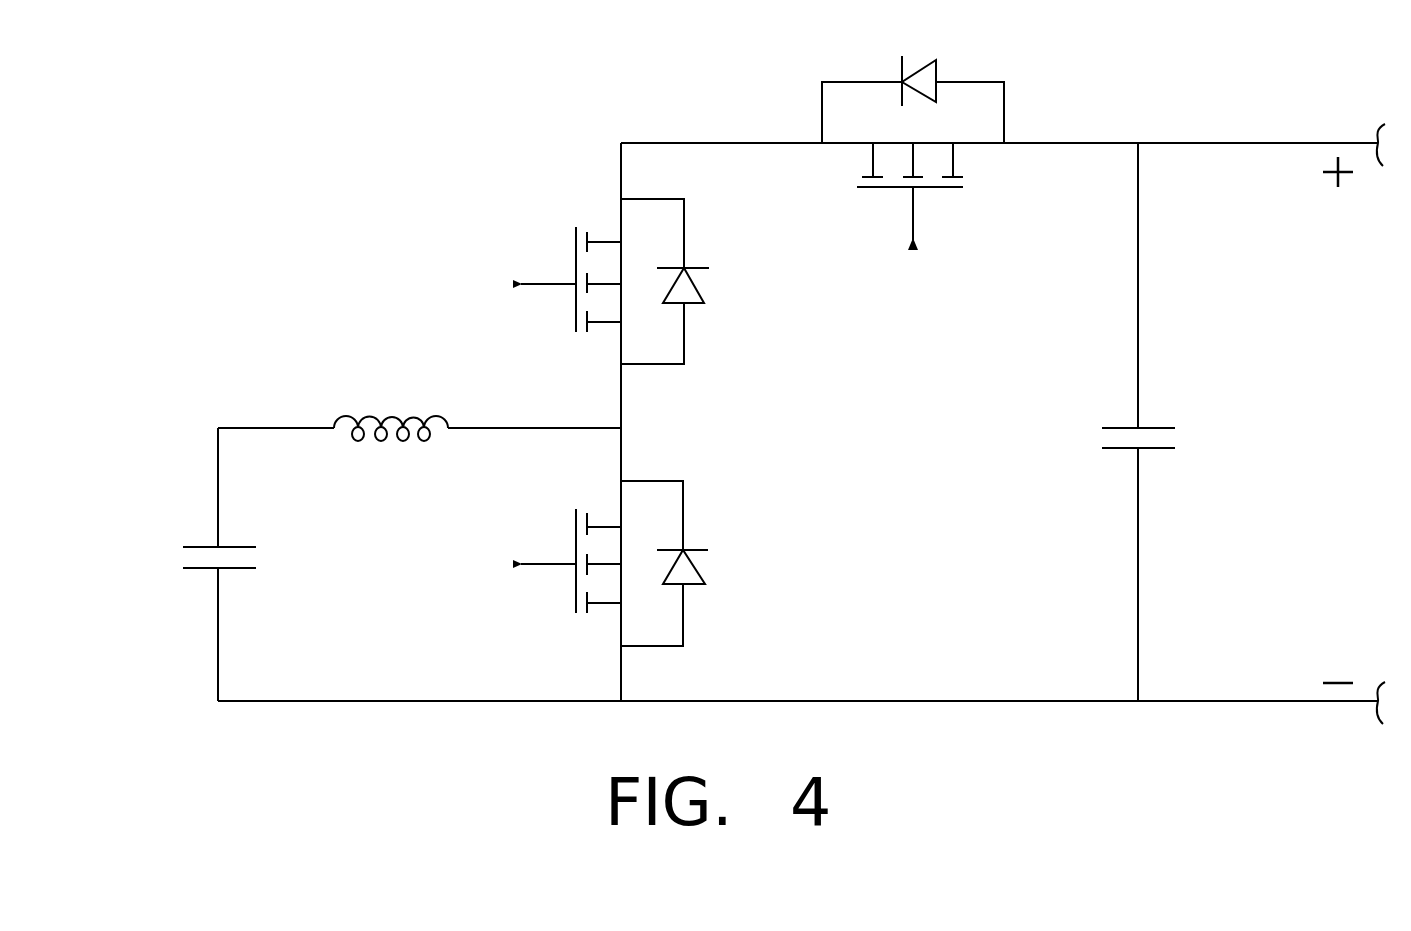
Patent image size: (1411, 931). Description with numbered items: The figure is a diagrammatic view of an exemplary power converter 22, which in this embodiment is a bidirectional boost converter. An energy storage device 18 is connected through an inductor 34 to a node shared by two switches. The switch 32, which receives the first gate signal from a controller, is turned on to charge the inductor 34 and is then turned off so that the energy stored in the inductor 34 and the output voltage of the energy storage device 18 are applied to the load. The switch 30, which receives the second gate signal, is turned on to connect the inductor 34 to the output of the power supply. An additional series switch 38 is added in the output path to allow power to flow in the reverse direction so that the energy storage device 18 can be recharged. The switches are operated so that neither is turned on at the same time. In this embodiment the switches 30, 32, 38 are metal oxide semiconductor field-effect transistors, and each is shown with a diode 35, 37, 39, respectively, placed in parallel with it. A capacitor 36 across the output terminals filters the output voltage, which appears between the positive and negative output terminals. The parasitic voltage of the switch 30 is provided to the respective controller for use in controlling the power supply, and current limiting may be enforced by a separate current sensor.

The energy storage device 18 is at (186, 552).
The converter 22 is at (342, 245).
The switch 30 is at (551, 230).
The switch 32 is at (597, 510).
The inductor 34 is at (395, 441).
The diode 35 is at (711, 304).
The capacitor 36 is at (1168, 440).
The diode 37 is at (711, 585).
The series switch 38 is at (969, 164).
The diode 39 is at (941, 57).